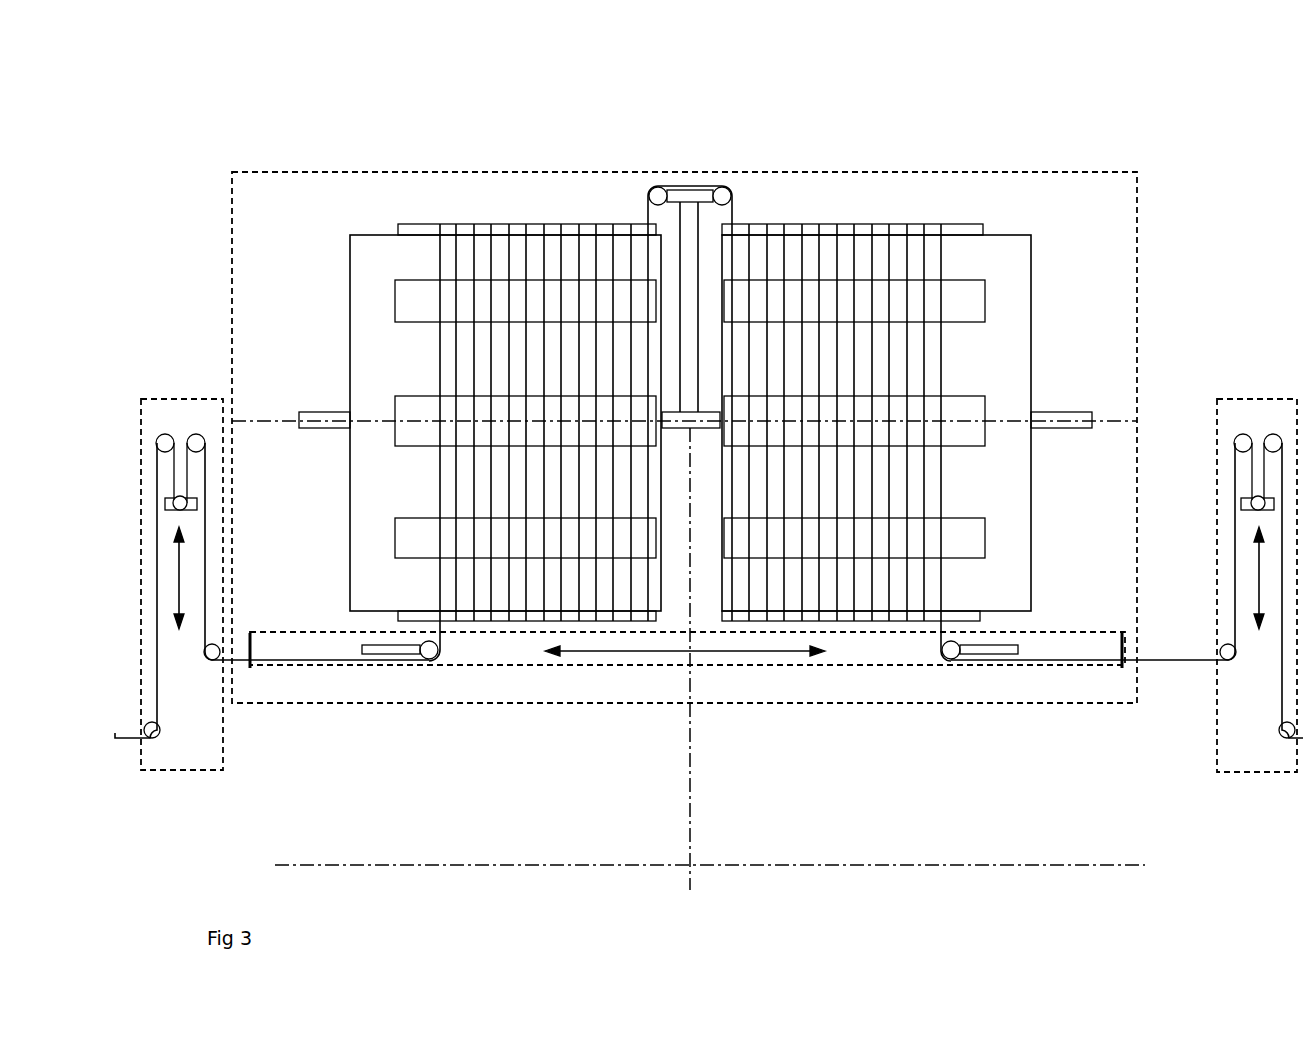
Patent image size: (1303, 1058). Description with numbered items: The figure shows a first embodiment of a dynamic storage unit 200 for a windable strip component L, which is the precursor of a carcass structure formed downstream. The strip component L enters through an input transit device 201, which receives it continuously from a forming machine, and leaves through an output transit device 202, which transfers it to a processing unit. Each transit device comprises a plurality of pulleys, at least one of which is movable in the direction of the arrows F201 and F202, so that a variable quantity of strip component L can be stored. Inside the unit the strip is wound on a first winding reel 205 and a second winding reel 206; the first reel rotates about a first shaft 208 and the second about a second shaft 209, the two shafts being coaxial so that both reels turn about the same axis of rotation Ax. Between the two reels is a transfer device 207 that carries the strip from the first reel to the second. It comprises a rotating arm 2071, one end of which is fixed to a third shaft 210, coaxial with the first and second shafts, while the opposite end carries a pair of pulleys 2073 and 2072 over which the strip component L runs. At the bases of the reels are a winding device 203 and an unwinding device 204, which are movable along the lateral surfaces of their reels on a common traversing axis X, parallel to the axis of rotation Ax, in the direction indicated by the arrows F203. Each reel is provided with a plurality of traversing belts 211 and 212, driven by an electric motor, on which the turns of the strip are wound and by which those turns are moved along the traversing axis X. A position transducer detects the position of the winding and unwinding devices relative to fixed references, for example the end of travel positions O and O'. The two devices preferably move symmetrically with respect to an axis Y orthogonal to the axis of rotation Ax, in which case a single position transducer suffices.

The dynamic storage unit 200 is at (223, 122).
The input transit device 201 is at (179, 403).
The output transit device 202 is at (1253, 423).
The winding device 203 is at (395, 647).
The unwinding device 204 is at (1015, 650).
The first winding reel 205 is at (387, 247).
The second winding reel 206 is at (995, 248).
The transfer device 207 is at (700, 230).
The rotating arm 2071 is at (688, 223).
The pulley 2072 is at (720, 200).
The pulley 2073 is at (657, 200).
The first shaft 208 is at (323, 412).
The second shaft 209 is at (1075, 417).
The third shaft 210 is at (708, 428).
The traversing belts 211 is at (408, 313).
The traversing belts 212 is at (970, 305).
The axis of rotation Ax is at (287, 420).
The arrow of pulley movement F201 is at (179, 573).
The arrow of pulley movement F202 is at (1259, 565).
The arrows of traversing movement F203 is at (577, 652).
The end of travel position O is at (277, 712).
The end of travel position O' is at (1095, 710).
The strip component L is at (945, 575).
The common traversing axis X is at (1030, 865).
The axis of symmetry Y is at (690, 825).